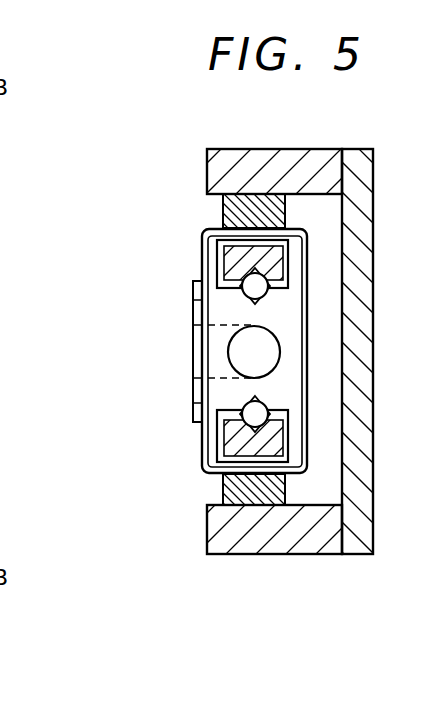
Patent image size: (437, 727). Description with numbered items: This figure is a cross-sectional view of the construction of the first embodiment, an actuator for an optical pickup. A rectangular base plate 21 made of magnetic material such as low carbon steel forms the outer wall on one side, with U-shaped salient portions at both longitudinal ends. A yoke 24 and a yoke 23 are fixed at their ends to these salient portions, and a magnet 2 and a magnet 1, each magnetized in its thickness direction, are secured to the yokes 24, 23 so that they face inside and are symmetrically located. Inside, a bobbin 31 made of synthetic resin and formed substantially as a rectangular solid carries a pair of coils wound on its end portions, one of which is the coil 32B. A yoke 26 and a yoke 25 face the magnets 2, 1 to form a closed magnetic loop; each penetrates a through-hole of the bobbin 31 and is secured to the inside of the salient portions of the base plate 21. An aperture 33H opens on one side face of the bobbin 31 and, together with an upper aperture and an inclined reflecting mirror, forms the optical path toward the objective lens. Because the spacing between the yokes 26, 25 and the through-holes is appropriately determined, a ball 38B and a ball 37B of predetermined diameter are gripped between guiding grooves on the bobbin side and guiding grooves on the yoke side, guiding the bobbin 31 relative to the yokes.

The yoke 24 is at (318, 162).
The base plate 21 is at (365, 341).
The yoke 23 is at (258, 545).
The magnet 2 is at (222, 216).
The magnet 1 is at (235, 490).
The coil 32B is at (308, 395).
The bobbin 31 is at (193, 297).
The aperture 33H is at (242, 357).
The yoke 26 is at (277, 265).
The ball 38B is at (250, 286).
The yoke 25 is at (276, 440).
The ball 37B is at (250, 412).